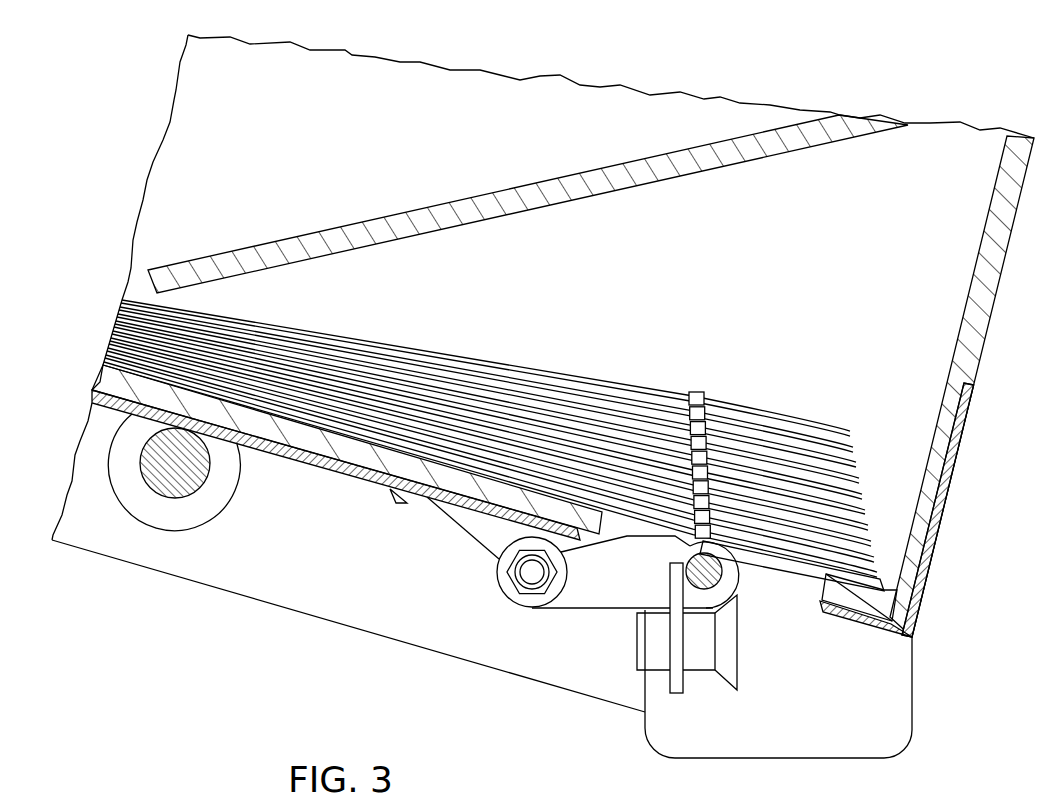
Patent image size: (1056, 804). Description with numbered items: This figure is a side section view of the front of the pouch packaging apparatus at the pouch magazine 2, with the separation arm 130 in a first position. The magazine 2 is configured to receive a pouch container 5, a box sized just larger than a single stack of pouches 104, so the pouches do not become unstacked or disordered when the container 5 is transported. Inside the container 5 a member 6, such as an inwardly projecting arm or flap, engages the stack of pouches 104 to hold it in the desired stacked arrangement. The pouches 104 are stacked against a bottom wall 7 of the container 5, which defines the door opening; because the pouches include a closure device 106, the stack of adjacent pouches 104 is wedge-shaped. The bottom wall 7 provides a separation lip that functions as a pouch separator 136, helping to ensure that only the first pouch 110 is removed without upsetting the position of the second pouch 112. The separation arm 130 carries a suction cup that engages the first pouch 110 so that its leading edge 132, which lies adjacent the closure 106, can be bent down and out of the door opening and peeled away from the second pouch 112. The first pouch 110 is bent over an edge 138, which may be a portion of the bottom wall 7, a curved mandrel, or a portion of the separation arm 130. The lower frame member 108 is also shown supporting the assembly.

The pouch magazine 2 is at (519, 510).
The pouch container 5 is at (528, 336).
The member 6 is at (528, 204).
The bottom wall 7 is at (336, 465).
The stack of pouches 104 is at (490, 422).
The closure device 106 is at (707, 443).
The lower frame 108 is at (482, 649).
The first pouch 110 is at (347, 449).
The second pouch 112 is at (444, 507).
The separation arm 130 is at (605, 608).
The leading edge 132 is at (792, 576).
The pouch separator 136 is at (847, 609).
The edge 138 is at (679, 615).